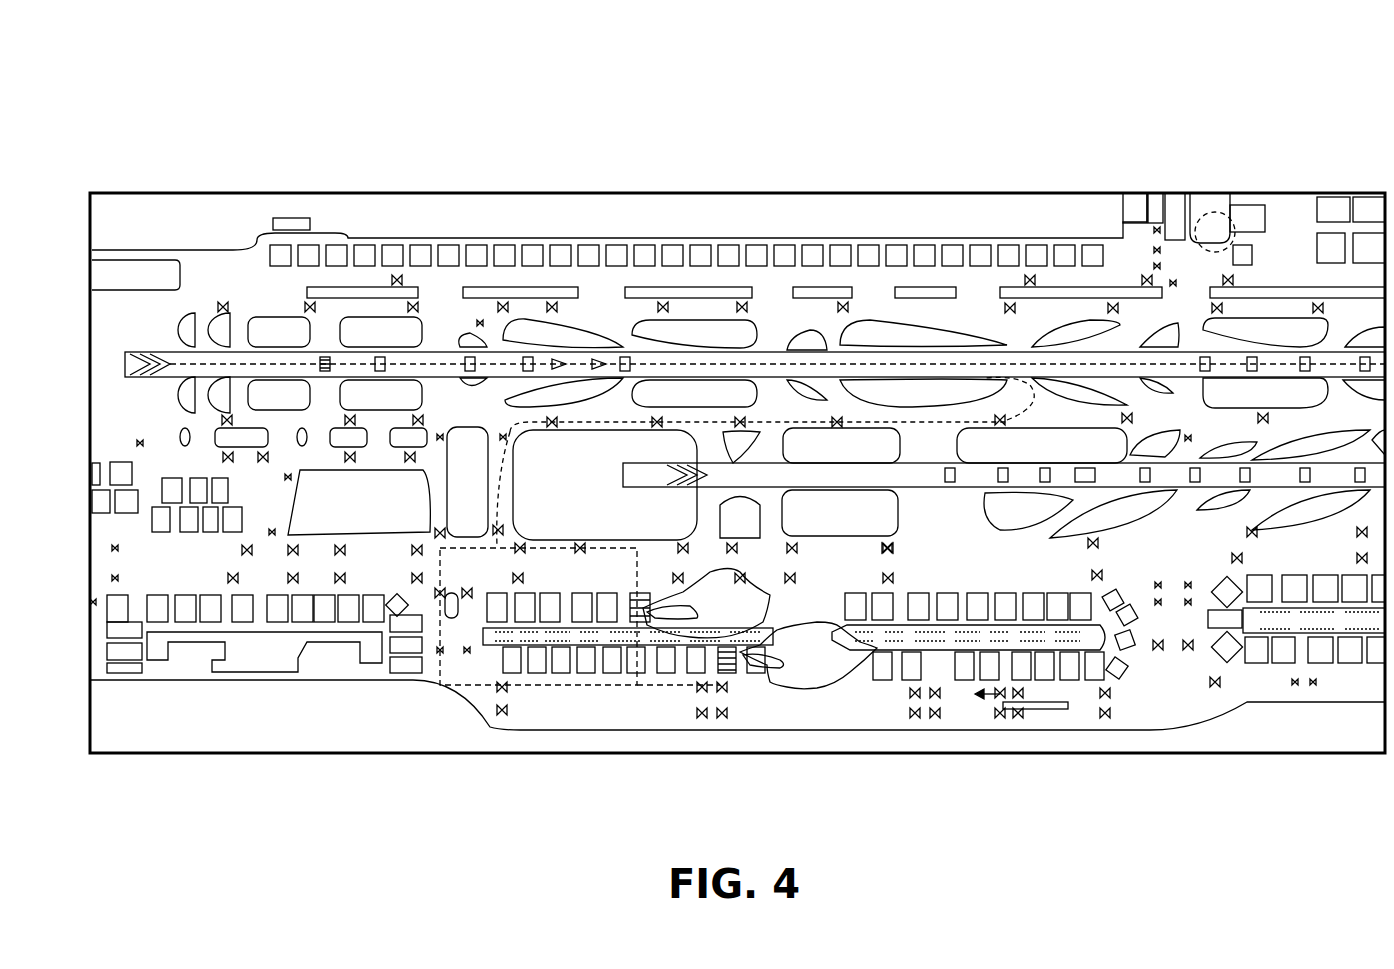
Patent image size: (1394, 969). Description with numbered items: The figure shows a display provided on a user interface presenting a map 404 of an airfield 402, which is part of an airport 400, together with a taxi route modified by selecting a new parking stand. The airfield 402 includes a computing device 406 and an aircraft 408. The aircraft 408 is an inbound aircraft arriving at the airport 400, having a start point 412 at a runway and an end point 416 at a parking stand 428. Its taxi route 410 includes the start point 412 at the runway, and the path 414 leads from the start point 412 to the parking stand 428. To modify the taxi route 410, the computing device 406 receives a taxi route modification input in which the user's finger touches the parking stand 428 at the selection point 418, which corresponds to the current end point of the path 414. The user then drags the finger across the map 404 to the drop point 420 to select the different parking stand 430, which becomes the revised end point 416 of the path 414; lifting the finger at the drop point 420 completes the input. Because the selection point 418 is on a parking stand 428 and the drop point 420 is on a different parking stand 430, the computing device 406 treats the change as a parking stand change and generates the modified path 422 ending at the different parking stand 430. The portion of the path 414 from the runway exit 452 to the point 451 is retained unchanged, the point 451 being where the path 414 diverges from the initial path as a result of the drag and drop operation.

The airport 400 is at (699, 405).
The airfield 402 is at (88, 233).
The map 404 is at (116, 346).
The computing device 406 is at (1228, 208).
The aircraft 408 is at (287, 345).
The taxi route 410 is at (562, 360).
The start point 412 is at (308, 360).
The path 414 is at (602, 360).
The end point 416 is at (647, 617).
The selection point 418 is at (733, 668).
The drop point 420 is at (645, 652).
The modified path 422 is at (623, 555).
The parking stand 428 is at (727, 657).
The different parking stand 430 is at (632, 605).
The point 451 is at (497, 545).
The runway exit 452 is at (1008, 387).